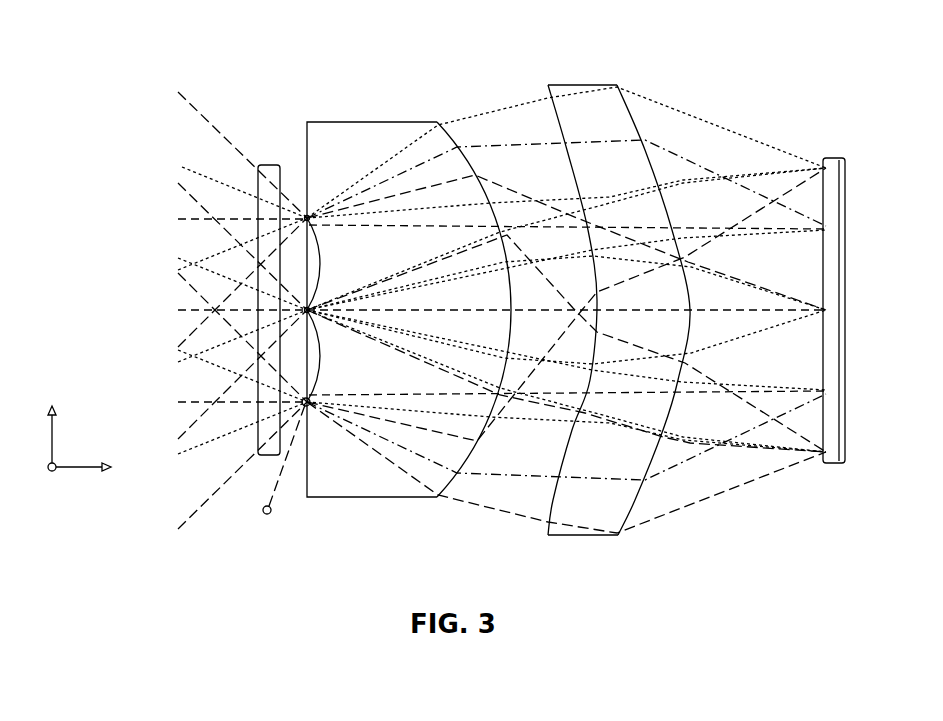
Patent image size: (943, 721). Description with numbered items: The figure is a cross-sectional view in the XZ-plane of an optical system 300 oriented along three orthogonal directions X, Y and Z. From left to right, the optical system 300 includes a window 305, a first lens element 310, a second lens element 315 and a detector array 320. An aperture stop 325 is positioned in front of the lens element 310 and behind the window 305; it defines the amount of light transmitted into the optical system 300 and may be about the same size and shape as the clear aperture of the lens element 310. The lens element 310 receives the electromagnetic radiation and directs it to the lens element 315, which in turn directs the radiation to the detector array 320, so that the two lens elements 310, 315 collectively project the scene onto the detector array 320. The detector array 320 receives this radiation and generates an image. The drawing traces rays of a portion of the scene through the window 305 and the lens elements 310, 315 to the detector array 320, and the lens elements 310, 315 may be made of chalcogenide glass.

The optical system 300 is at (170, 60).
The window 305 is at (270, 165).
The lens element 310 is at (380, 122).
The lens element 315 is at (593, 84).
The detector array 320 is at (832, 158).
The aperture stop 325 is at (266, 515).